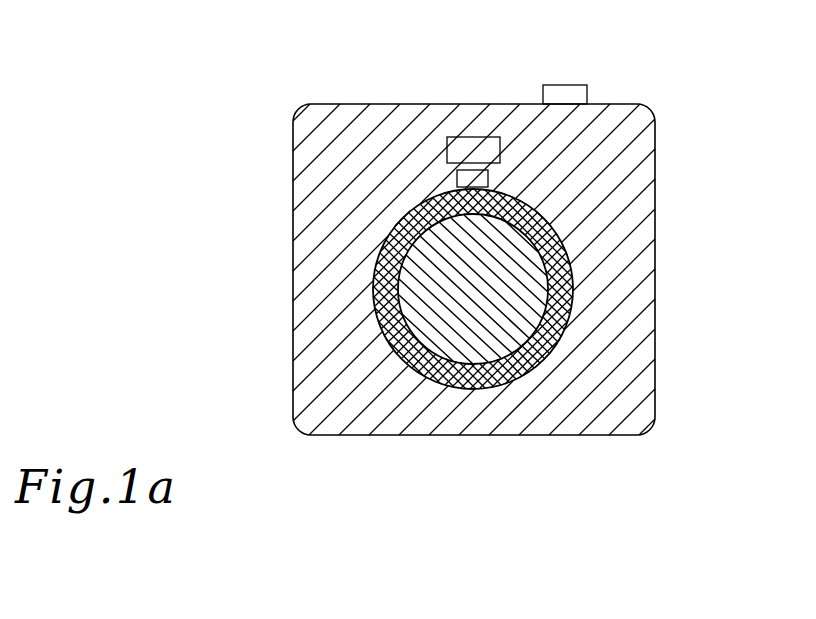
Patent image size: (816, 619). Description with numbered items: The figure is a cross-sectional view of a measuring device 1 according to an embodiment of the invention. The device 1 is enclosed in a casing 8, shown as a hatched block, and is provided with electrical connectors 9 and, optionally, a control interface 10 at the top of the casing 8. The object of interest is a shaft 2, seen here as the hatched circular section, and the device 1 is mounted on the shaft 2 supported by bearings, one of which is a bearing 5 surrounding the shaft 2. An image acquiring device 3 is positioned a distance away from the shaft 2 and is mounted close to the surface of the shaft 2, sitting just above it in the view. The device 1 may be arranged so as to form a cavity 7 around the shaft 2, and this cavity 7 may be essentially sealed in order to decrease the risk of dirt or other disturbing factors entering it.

The measuring device 1 is at (239, 61).
The shaft 2 is at (508, 288).
The image acquiring device 3 is at (457, 178).
The bearing 5 is at (545, 289).
The cavity 7 is at (546, 345).
The casing 8 is at (622, 163).
The electrical connectors 9 is at (472, 137).
The control interface 10 is at (587, 92).